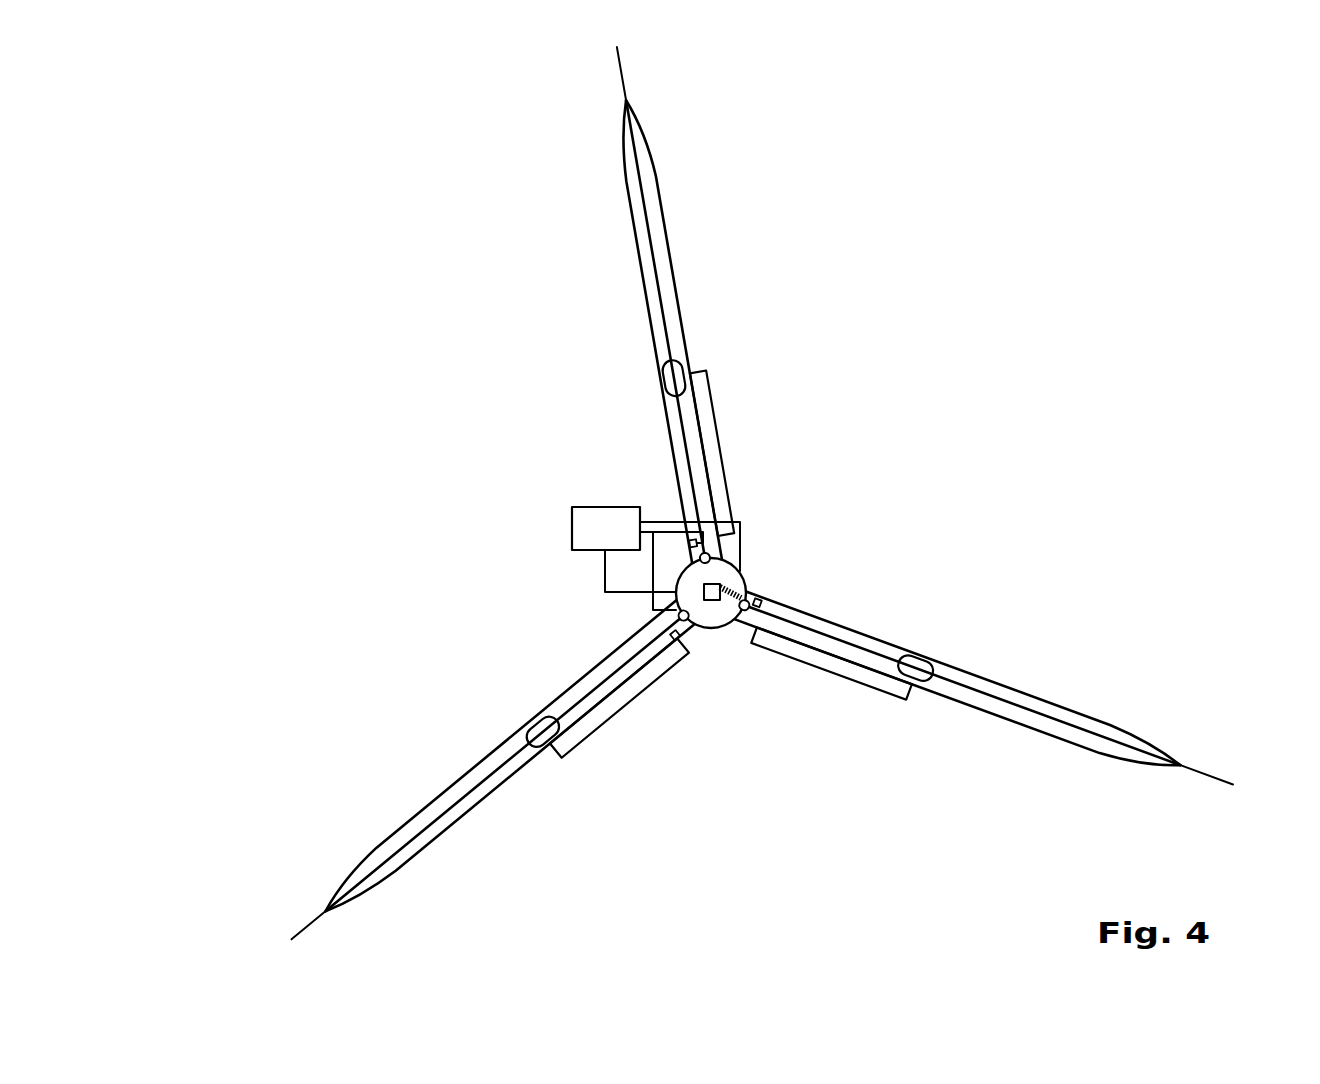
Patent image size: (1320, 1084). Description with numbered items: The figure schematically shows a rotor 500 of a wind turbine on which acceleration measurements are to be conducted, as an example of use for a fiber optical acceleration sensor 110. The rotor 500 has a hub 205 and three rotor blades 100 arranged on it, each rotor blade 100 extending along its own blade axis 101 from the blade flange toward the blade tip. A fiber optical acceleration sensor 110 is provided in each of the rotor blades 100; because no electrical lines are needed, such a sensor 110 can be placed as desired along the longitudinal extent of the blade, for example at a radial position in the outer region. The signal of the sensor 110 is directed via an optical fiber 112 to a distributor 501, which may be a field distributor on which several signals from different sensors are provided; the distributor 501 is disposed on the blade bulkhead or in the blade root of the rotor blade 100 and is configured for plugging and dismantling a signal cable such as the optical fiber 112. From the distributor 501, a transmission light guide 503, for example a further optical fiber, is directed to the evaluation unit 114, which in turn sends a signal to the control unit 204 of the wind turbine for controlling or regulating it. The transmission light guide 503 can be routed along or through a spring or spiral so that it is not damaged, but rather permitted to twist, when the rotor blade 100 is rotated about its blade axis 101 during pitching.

The rotor blade 100 is at (662, 258).
The blade axis 101 is at (624, 84).
The fiber optical acceleration sensor 110 is at (664, 375).
The optical fiber 112 is at (898, 705).
The evaluation unit 114 is at (748, 575).
The control unit 204 is at (572, 522).
The hub 205 is at (712, 628).
The rotor 500 is at (325, 361).
The distributor 501 is at (690, 545).
The transmission light guide 503 is at (738, 565).